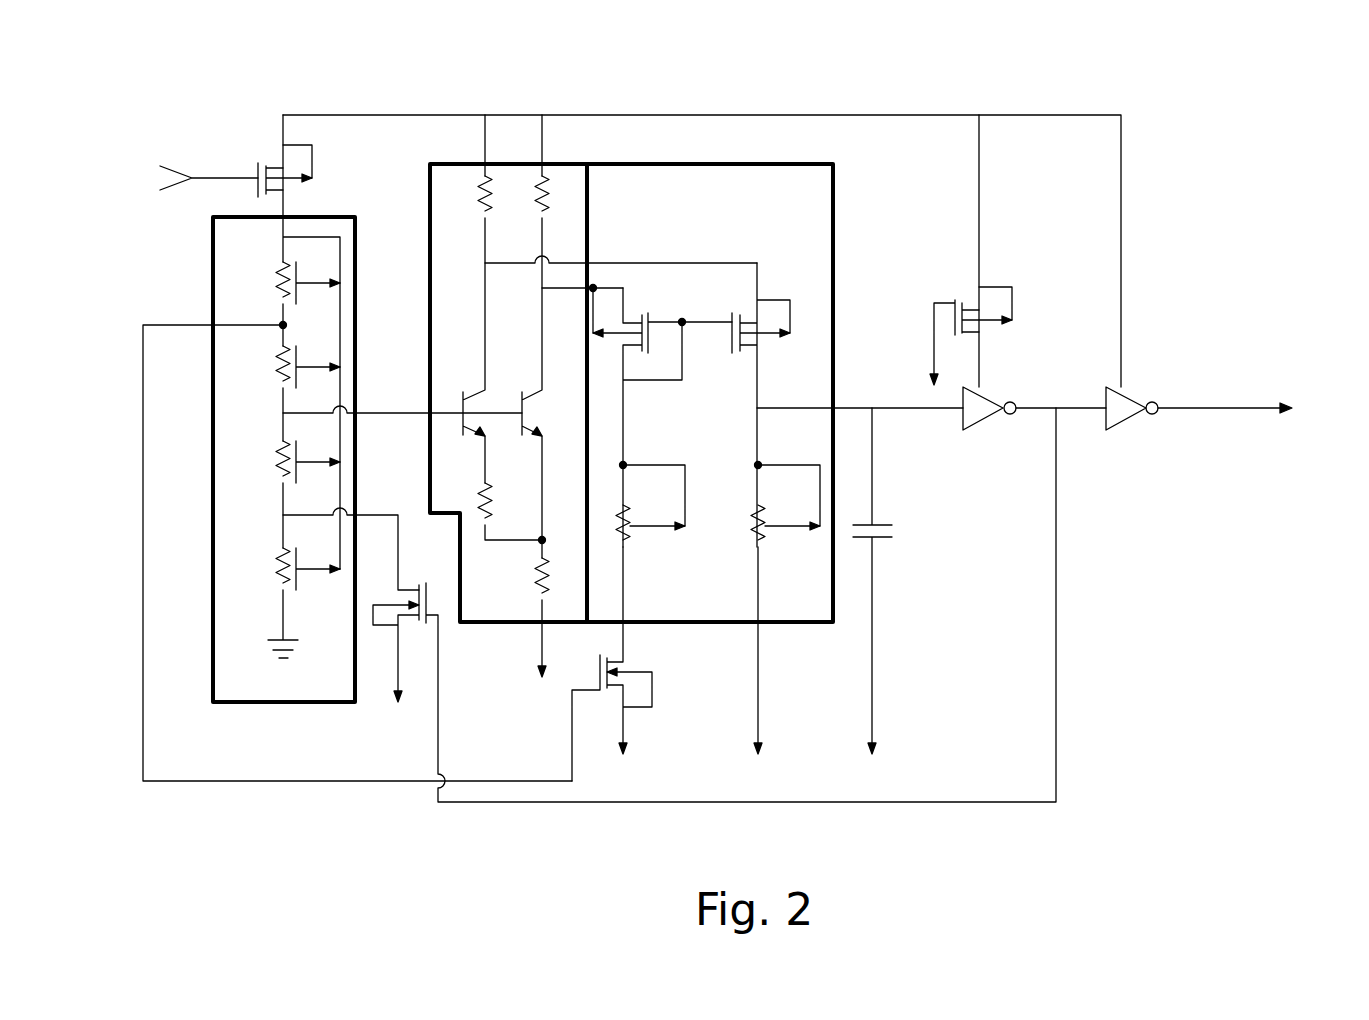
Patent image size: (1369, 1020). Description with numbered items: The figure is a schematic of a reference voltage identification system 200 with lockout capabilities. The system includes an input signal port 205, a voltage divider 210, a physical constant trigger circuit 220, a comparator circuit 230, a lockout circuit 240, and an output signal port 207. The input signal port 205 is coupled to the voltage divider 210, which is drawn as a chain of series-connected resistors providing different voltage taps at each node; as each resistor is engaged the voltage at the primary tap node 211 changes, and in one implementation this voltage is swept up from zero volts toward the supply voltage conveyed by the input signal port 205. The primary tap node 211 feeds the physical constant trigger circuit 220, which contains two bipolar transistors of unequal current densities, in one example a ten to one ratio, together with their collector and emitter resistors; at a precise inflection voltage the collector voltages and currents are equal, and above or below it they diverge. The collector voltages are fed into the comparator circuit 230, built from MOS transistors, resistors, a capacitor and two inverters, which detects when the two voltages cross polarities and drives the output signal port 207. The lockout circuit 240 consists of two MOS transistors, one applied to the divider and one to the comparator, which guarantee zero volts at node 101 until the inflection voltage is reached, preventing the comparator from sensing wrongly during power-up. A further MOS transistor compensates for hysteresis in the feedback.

The reference voltage identification system 200 is at (708, 68).
The input signal port 205 is at (193, 179).
The lockout circuit 240 is at (325, 150).
The voltage divider 210 is at (284, 459).
The primary tap node 211 is at (278, 413).
The physical constant trigger circuit 220 is at (515, 635).
The comparator circuit 230 is at (710, 459).
The node 101 is at (770, 405).
The output signal port 207 is at (1252, 395).